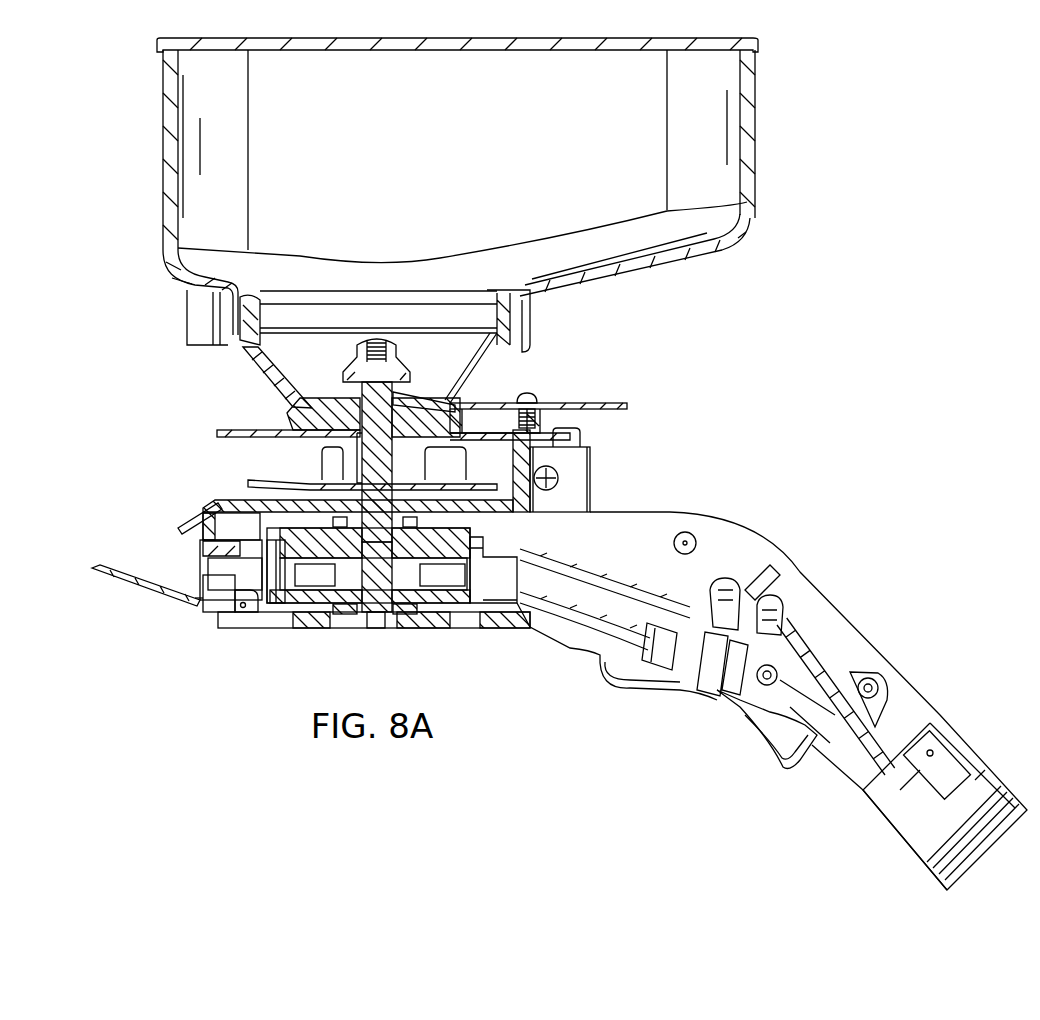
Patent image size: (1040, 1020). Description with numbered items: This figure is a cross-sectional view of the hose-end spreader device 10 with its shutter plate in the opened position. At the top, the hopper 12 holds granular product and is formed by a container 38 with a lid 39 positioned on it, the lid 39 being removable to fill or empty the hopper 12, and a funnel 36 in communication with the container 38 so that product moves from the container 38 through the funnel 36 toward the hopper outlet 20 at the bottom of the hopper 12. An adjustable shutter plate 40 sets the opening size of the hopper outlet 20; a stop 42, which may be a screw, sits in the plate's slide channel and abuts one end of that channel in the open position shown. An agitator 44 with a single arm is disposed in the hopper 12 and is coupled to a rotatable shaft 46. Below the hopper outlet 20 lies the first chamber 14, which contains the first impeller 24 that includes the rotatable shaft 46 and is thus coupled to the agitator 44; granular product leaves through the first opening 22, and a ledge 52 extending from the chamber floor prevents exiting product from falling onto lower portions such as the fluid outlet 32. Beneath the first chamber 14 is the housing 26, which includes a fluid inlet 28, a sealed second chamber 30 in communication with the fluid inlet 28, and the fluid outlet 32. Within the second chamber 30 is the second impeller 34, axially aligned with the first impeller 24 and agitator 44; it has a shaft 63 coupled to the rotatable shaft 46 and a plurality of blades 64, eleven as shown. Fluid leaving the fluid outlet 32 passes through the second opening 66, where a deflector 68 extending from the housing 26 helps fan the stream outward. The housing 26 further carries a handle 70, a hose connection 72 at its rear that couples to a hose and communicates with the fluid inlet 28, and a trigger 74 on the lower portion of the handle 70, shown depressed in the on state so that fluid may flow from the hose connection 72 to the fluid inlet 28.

The hose-end spreader device 10 is at (963, 117).
The hopper 12 is at (462, 195).
The first chamber 14 is at (224, 431).
The hopper outlet 20 is at (398, 400).
The first opening 22 is at (233, 458).
The first impeller 24 is at (488, 477).
The housing 26 is at (293, 600).
The fluid inlet 28 is at (514, 580).
The second chamber 30 is at (245, 613).
The fluid outlet 32 is at (195, 598).
The second impeller 34 is at (405, 580).
The funnel 36 is at (253, 363).
The container 38 is at (163, 148).
The lid 39 is at (391, 52).
The shutter plate 40 is at (612, 402).
The stop 42 is at (531, 395).
The agitator 44 is at (343, 340).
The rotatable shaft 46 is at (358, 393).
The ledge 52 is at (205, 520).
The shaft 63 is at (410, 550).
The blades 64 is at (422, 599).
The second opening 66 is at (205, 572).
The deflector 68 is at (105, 578).
The handle 70 is at (873, 645).
The hose connection 72 is at (977, 857).
The trigger 74 is at (787, 775).